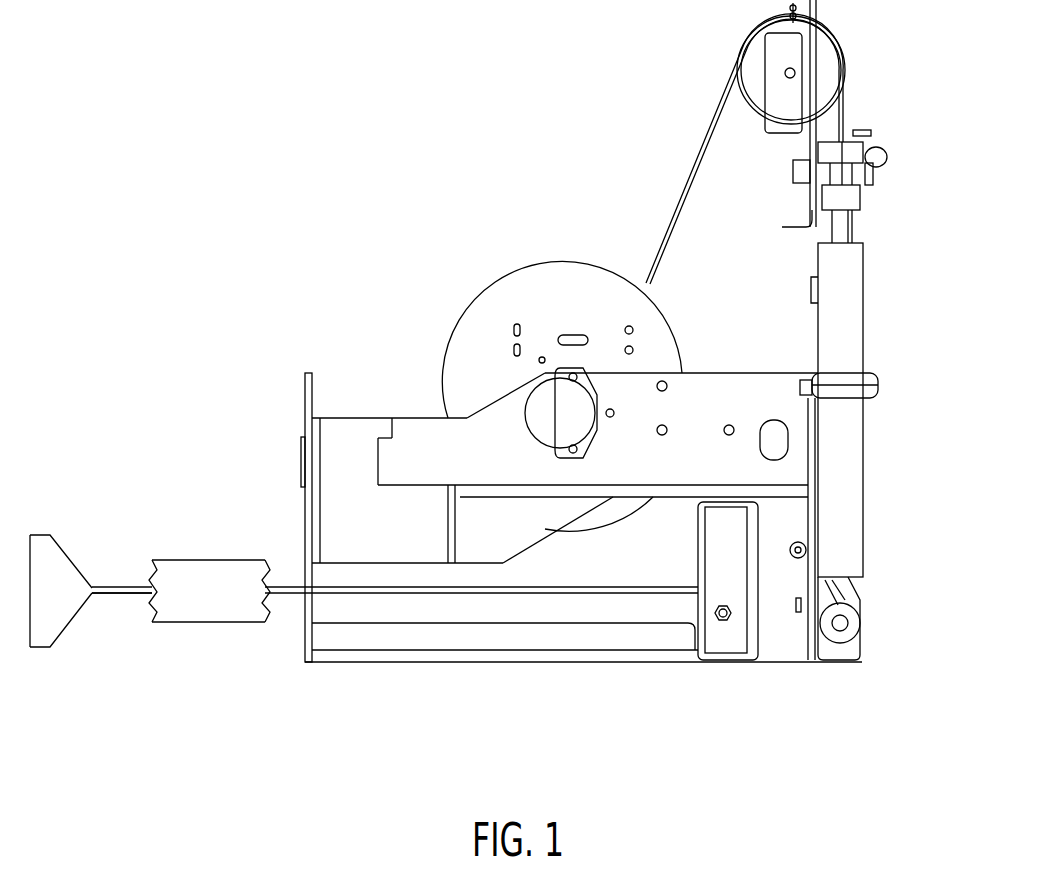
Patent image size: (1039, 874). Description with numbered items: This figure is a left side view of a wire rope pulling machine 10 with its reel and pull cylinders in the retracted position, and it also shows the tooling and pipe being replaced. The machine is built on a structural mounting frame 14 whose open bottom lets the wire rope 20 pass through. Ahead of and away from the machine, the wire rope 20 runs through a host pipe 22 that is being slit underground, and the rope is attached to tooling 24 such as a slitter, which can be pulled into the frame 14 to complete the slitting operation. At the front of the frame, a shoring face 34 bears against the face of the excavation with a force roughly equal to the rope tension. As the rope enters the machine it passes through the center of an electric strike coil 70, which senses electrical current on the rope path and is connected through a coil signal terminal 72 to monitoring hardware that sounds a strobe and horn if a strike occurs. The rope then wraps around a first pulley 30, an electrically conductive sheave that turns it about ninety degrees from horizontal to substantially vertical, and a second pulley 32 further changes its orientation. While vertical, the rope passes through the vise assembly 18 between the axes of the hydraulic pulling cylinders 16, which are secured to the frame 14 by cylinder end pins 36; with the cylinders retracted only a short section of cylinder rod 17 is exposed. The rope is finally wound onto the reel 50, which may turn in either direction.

The wire rope pulling machine 10 is at (478, 155).
The structural mounting frame 14 is at (468, 608).
The hydraulic pulling cylinders 16 is at (843, 335).
The cylinder rod 17 is at (838, 232).
The vise assembly 18 is at (848, 153).
The wire rope 20 is at (95, 593).
The host pipe 22 is at (248, 560).
The tooling 24 is at (62, 552).
The first pulley 30 is at (832, 583).
The second pulley 32 is at (822, 67).
The shoring face 34 is at (305, 402).
The cylinder end pins 36 is at (848, 630).
The reel 50 is at (475, 362).
The electric strike coil 70 is at (727, 640).
The coil signal terminal 72 is at (722, 622).